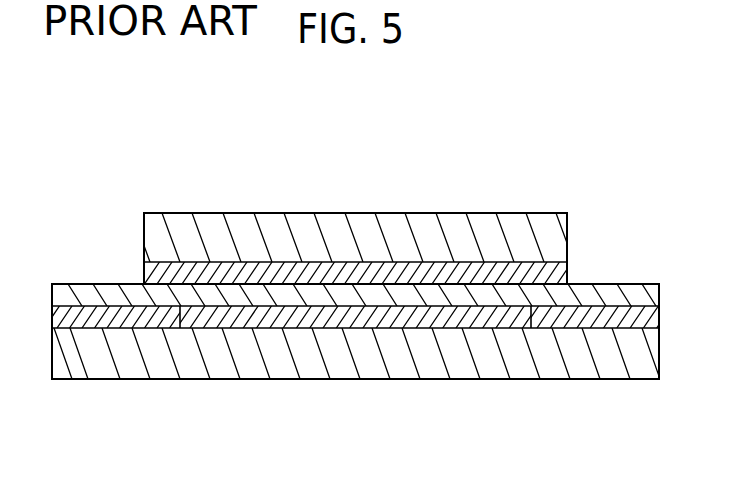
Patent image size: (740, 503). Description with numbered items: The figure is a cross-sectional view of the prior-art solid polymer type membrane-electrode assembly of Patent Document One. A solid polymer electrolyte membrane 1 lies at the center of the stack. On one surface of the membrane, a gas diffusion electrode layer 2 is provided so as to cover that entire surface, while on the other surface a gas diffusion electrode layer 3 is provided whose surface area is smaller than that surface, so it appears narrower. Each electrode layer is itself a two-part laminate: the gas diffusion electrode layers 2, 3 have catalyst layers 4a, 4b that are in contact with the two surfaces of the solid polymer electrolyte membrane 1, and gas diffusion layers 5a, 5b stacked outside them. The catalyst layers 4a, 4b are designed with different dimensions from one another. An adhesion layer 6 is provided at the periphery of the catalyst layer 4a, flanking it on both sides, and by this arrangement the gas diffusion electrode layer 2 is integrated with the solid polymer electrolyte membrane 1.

The solid polymer electrolyte membrane 1 is at (621, 294).
The gas diffusion electrode layer 2 is at (403, 413).
The gas diffusion electrode layer 3 is at (528, 196).
The catalyst layer 4a is at (270, 318).
The catalyst layer 4b is at (171, 278).
The gas diffusion layer 5a is at (543, 350).
The gas diffusion layer 5b is at (215, 243).
The adhesion layer 6 is at (103, 317).